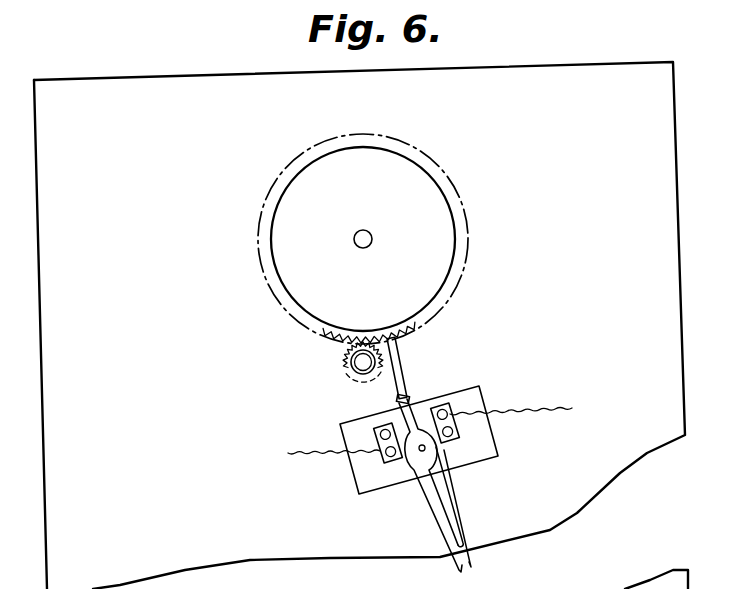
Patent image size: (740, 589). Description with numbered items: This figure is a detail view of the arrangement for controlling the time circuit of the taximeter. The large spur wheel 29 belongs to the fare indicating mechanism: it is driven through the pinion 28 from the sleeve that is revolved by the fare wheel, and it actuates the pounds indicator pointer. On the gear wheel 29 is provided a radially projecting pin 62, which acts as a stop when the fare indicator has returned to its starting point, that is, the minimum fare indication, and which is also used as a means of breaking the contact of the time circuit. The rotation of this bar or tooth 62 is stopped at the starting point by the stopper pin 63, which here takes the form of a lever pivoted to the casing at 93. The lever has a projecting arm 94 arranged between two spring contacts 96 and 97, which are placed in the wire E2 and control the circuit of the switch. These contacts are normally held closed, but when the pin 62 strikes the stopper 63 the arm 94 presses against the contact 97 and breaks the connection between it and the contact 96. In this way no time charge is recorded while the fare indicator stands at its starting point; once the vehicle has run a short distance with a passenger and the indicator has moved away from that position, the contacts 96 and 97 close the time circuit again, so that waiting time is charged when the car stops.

The spur wheel 29 is at (417, 183).
The pinion 28 is at (348, 357).
The radially projecting pin 62 is at (403, 362).
The stopper pin 63 is at (397, 400).
The pivot 93 is at (427, 448).
The projecting arm 94 is at (443, 485).
The spring contact 96 is at (428, 510).
The spring contact 97 is at (463, 510).
The wire E2 is at (534, 410).